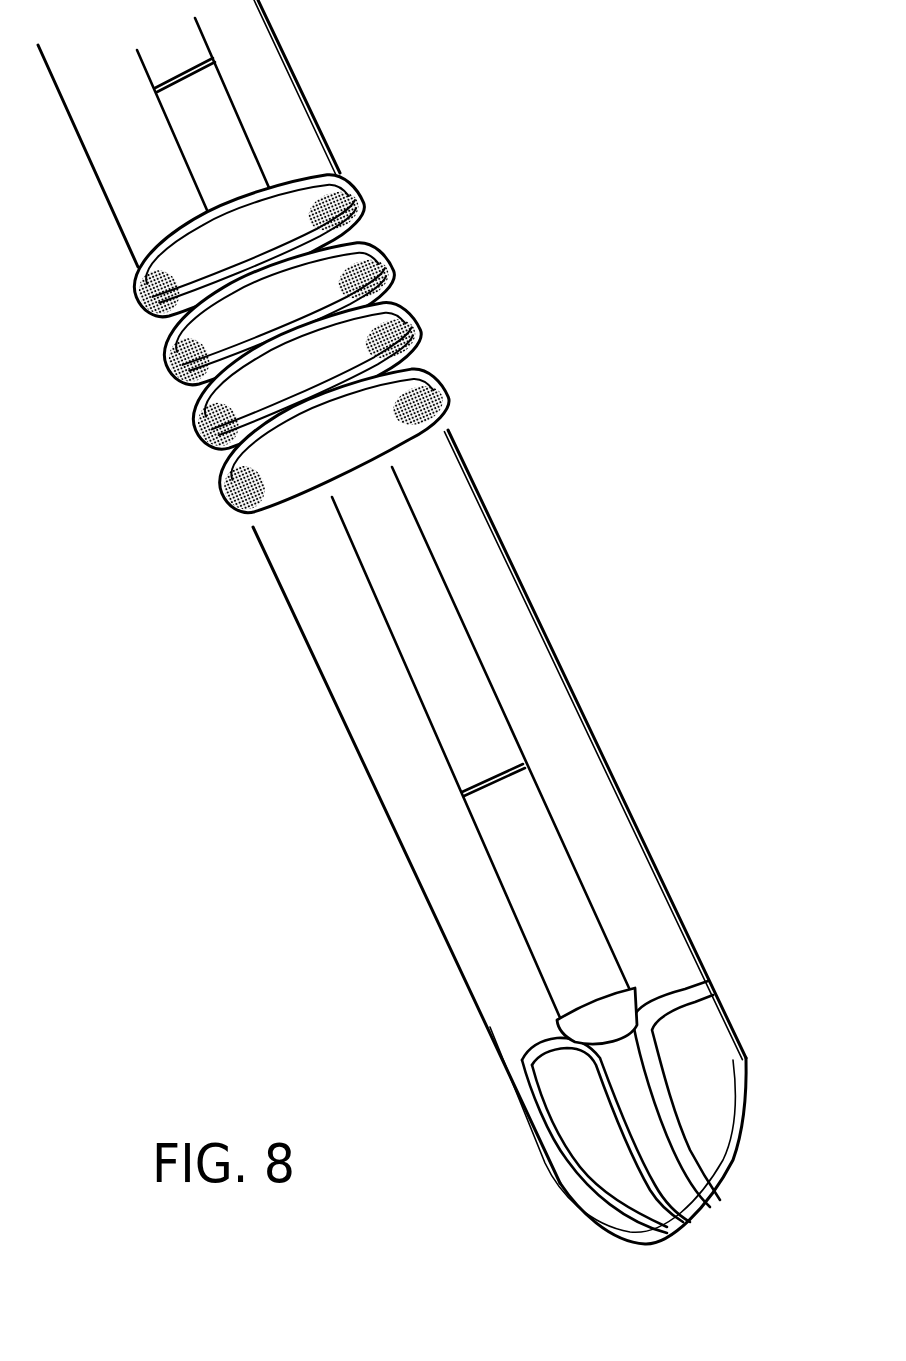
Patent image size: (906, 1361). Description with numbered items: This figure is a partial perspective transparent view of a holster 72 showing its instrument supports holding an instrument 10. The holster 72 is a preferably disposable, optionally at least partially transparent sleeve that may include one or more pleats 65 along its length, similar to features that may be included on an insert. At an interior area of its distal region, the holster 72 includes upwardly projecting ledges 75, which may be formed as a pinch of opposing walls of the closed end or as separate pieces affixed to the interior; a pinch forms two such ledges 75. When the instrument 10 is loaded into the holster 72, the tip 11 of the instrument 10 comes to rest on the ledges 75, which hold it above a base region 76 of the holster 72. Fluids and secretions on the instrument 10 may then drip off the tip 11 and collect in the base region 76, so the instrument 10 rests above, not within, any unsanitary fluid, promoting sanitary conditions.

The instrument 10 is at (510, 742).
The tip 11 is at (613, 1005).
The pleats 65 is at (393, 263).
The holster 72 is at (505, 540).
The upwardly projecting ledges 75 is at (520, 1055).
The base region 76 is at (727, 1172).